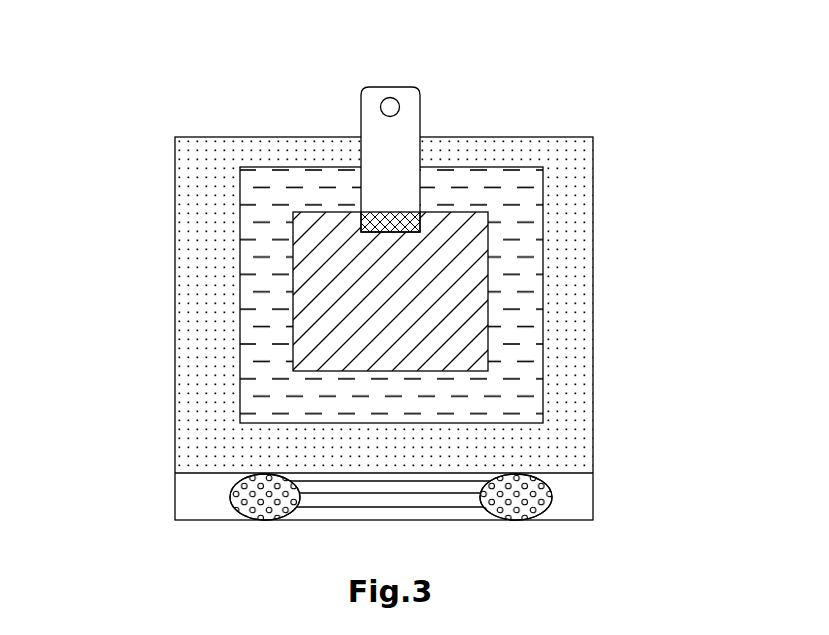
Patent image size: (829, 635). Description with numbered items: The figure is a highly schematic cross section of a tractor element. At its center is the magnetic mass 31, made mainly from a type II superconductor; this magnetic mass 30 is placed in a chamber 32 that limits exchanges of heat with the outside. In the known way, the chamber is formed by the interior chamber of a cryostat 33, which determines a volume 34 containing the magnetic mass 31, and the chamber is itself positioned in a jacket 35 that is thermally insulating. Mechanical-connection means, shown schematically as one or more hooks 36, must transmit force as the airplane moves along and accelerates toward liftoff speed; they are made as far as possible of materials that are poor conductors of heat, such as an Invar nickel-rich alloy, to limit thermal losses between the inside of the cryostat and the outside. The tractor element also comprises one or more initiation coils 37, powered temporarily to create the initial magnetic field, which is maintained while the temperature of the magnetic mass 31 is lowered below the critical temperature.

The magnetic mass 30 is at (117, 288).
The magnetic mass 31 is at (475, 288).
The chamber 32 is at (175, 368).
The cryostat 33 is at (543, 203).
The volume 34 is at (530, 387).
The jacket 35 is at (580, 432).
The hooks 36 is at (412, 102).
The initiation coils 37 is at (252, 507).